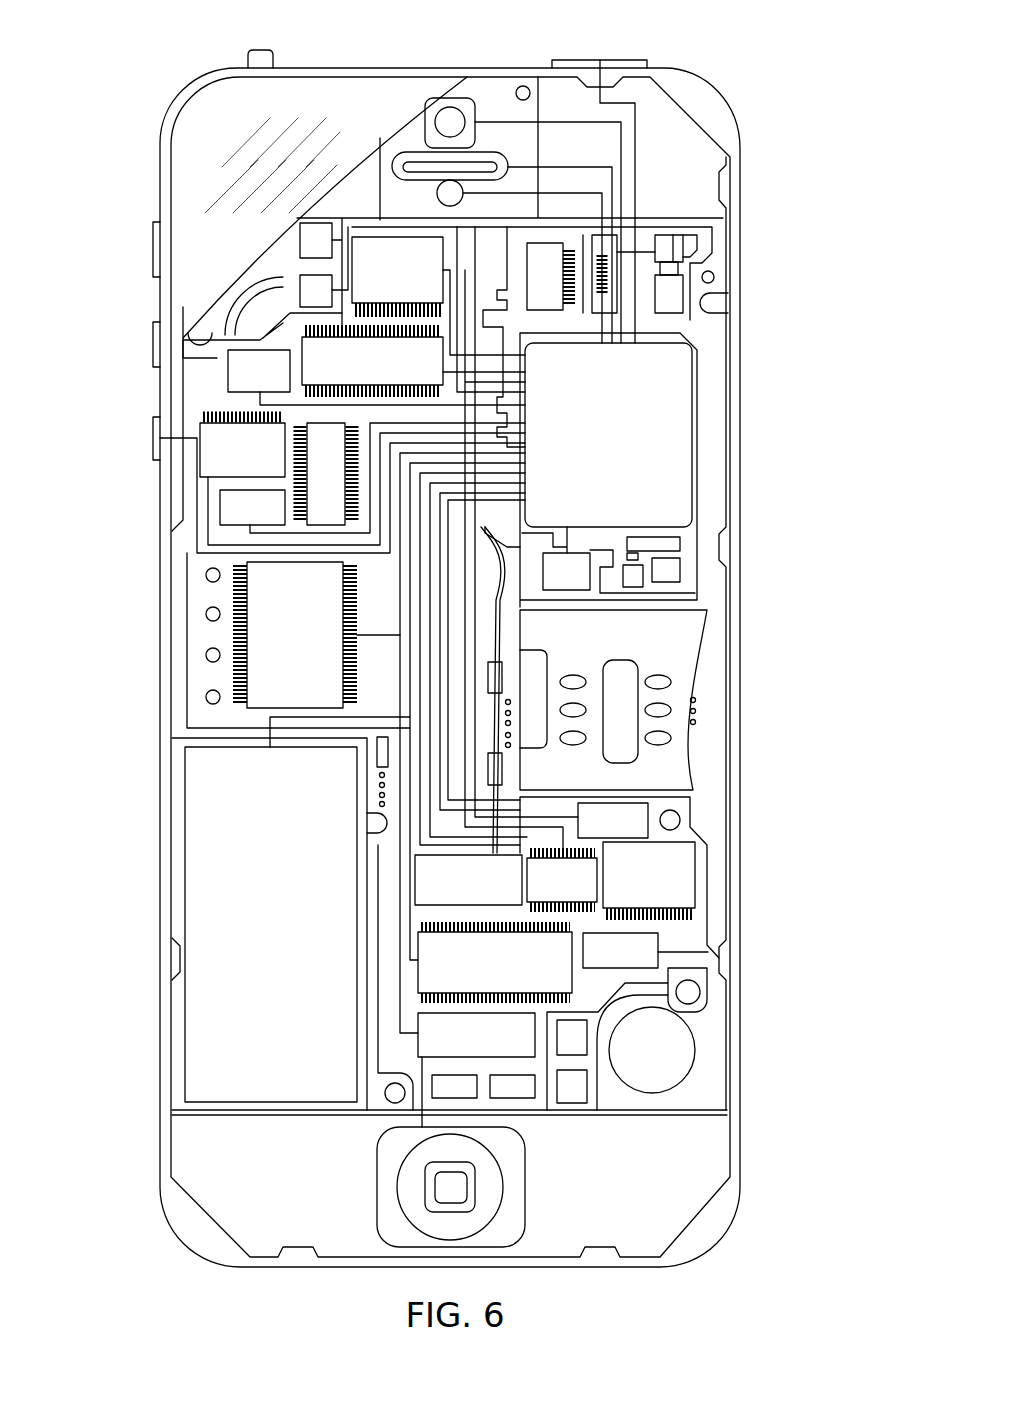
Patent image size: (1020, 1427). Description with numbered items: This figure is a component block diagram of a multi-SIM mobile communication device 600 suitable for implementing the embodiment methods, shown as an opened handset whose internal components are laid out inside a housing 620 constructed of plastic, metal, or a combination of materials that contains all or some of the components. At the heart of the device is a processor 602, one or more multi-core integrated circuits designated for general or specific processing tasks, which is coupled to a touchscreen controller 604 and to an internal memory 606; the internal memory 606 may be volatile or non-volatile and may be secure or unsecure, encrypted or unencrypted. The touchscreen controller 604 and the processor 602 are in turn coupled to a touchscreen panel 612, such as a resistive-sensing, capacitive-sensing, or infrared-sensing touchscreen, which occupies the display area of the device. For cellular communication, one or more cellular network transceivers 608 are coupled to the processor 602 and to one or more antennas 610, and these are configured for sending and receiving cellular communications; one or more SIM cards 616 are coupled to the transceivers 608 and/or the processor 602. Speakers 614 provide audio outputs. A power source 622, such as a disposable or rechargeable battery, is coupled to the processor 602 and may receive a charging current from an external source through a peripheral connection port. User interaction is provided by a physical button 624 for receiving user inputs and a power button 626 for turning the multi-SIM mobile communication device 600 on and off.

The multi-SIM mobile communication device 600 is at (112, 56).
The processor 602 is at (608, 470).
The touchscreen controller 604 is at (397, 273).
The internal memory 606 is at (298, 650).
The cellular network transceivers 608 is at (640, 247).
The antennas 610 is at (677, 287).
The touchscreen panel 612 is at (203, 167).
The speakers 614 is at (402, 148).
The SIM cards 616 is at (619, 877).
The housing 620 is at (745, 1140).
The power source 622 is at (292, 923).
The physical button 624 is at (460, 1197).
The power button 626 is at (598, 57).